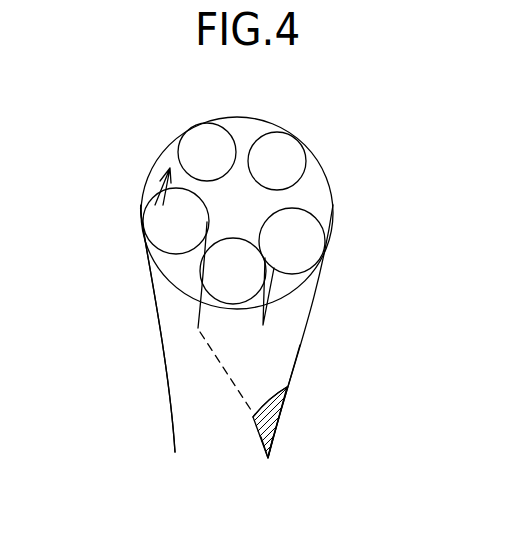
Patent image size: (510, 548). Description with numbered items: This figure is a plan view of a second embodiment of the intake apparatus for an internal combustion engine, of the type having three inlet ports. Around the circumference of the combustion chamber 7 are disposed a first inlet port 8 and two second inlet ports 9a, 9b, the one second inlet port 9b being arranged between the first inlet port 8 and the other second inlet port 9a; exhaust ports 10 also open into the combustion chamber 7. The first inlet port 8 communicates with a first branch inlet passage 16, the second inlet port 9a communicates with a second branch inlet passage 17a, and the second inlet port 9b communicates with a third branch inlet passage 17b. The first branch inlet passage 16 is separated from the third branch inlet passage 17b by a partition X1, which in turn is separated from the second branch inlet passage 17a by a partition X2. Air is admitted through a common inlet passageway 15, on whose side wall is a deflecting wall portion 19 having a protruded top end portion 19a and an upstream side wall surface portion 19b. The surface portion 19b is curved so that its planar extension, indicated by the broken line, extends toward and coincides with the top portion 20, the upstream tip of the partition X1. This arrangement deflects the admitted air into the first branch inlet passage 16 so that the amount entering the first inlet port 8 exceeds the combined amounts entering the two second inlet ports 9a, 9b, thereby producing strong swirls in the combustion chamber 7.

The combustion chamber 7 is at (250, 128).
The first inlet port 8 is at (153, 217).
The second inlet port 9a is at (312, 242).
The second inlet port 9b is at (253, 279).
The exhaust ports 10 is at (193, 137).
The common inlet passageway 15 is at (182, 411).
The first branch inlet passage 16 is at (162, 303).
The second branch inlet passage 17a is at (253, 278).
The third branch inlet passage 17b is at (232, 315).
The deflecting wall portion 19 is at (278, 412).
The protruded top end portion 19a is at (253, 417).
The upstream side wall surface portion 19b is at (270, 445).
The top portion 20 is at (198, 325).
The partition X1 is at (197, 277).
The partition X2 is at (268, 295).